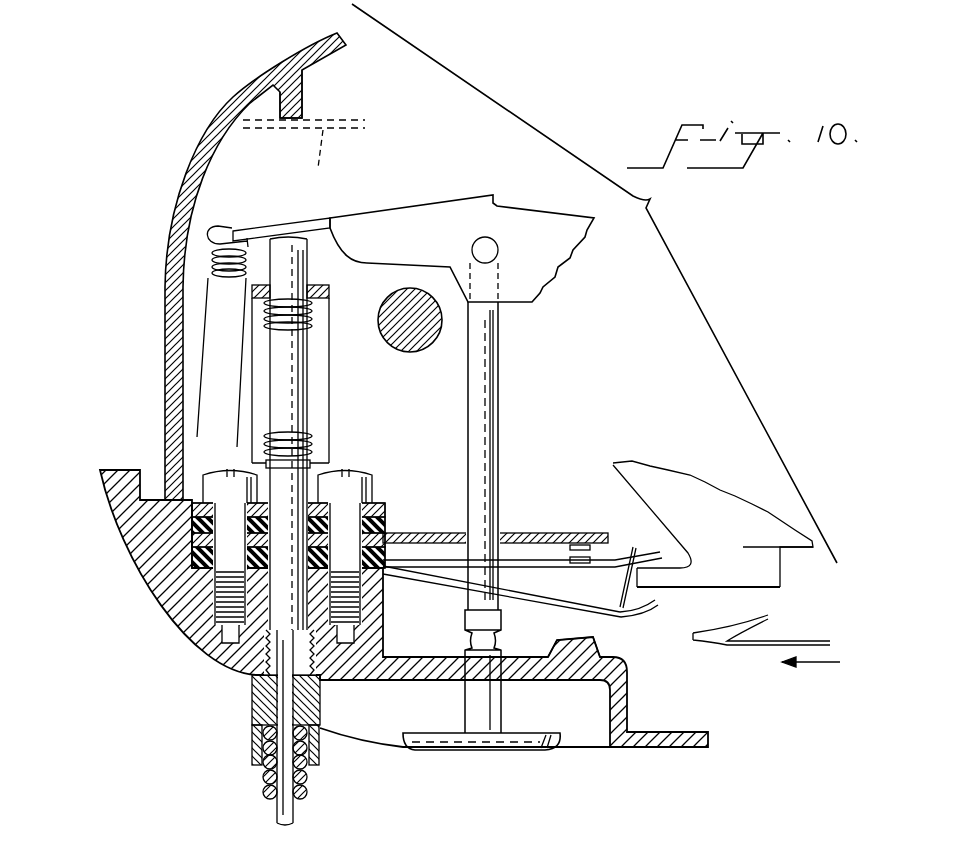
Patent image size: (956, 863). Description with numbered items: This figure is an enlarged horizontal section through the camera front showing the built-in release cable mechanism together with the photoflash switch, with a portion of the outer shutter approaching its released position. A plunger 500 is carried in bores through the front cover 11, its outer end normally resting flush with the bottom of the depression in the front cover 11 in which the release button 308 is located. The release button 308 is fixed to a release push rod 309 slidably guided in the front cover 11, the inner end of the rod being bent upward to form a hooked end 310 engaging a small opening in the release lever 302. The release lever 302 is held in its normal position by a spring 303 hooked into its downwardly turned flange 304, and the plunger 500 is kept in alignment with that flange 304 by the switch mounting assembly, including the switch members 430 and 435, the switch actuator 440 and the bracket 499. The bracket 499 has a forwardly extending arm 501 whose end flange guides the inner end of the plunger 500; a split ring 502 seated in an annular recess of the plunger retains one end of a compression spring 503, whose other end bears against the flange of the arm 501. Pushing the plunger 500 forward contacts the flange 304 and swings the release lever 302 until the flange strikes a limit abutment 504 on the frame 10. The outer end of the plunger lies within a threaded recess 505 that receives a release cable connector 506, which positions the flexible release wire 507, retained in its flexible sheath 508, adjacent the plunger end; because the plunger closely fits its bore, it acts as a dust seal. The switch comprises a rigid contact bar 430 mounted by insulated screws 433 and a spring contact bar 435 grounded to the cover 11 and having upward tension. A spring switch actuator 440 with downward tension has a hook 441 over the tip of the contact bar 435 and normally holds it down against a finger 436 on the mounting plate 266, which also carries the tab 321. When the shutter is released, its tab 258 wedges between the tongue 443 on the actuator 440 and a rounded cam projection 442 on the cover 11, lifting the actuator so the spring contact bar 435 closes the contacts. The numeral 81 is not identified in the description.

The frame 10 is at (286, 48).
The limit abutment 504 is at (297, 100).
The spring 303 is at (212, 255).
The downwardly turned flange 304 is at (283, 228).
The release lever 302 is at (534, 215).
The hooked end 310 is at (492, 249).
The plunger 500 is at (300, 262).
The compression spring 503 is at (313, 325).
The split ring 502 is at (330, 461).
The shaft 81 is at (425, 338).
The arm 501 is at (255, 370).
The insulated screws 433 is at (215, 470).
The bracket 499 is at (385, 511).
The release push rod 309 is at (498, 428).
The rigid contact bar 430 is at (528, 538).
The spring contact bar 435 is at (612, 557).
The hook 441 is at (633, 548).
The spring switch actuator 440 is at (560, 600).
The tongue 443 is at (612, 620).
The finger 436 is at (661, 585).
The tab 321 is at (781, 585).
The timer and resetting mechanism mounting plate 266 is at (712, 487).
The tab 258 is at (762, 627).
The rounded cam projection 442 is at (585, 650).
The front cover 11 is at (687, 732).
The release button 308 is at (493, 749).
The threaded recess 505 is at (255, 677).
The release cable connector 506 is at (255, 710).
The flexible sheath 508 is at (312, 790).
The flexible release wire 507 is at (295, 816).